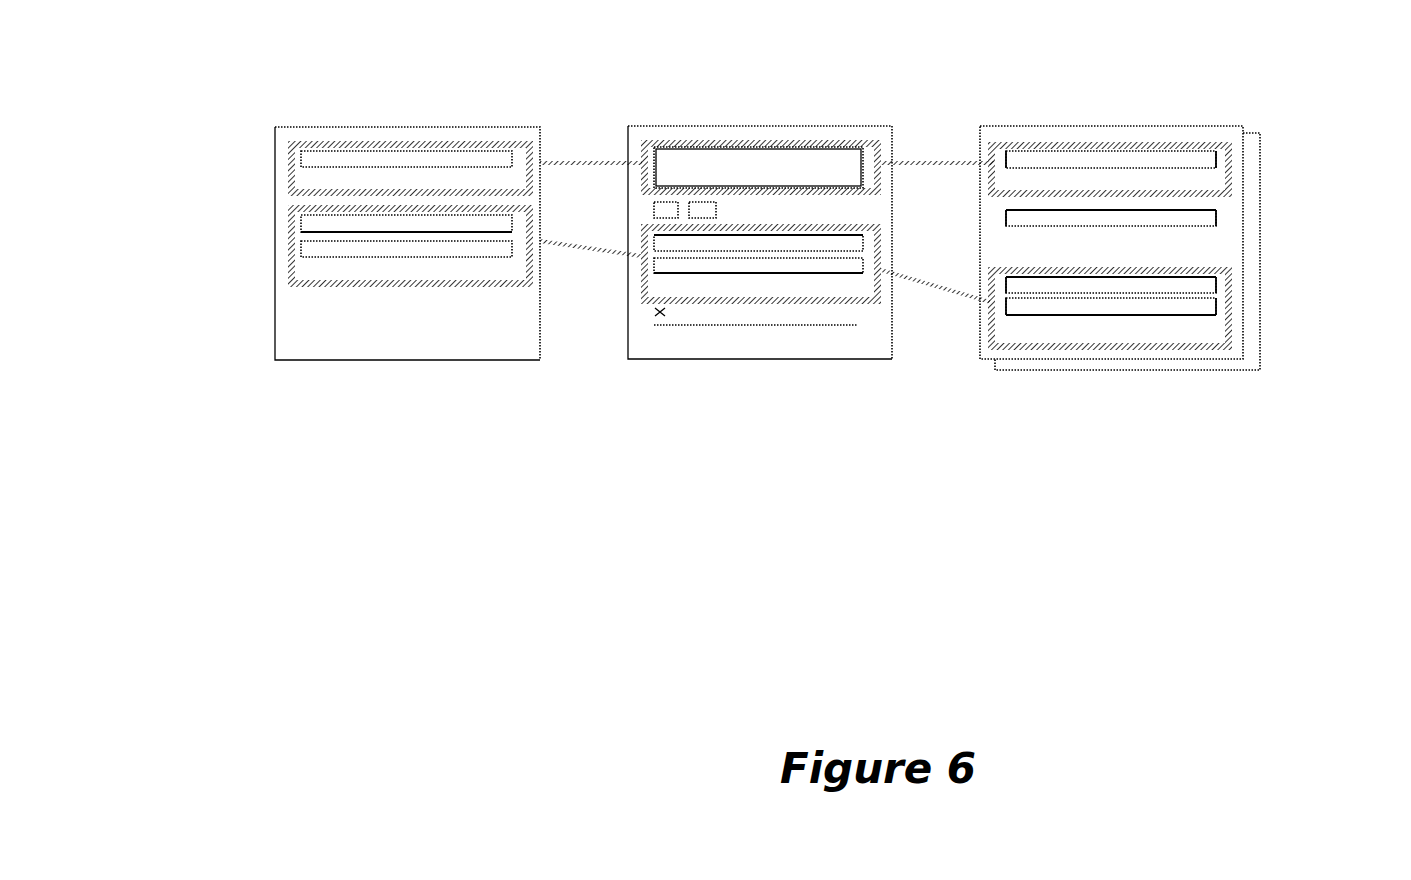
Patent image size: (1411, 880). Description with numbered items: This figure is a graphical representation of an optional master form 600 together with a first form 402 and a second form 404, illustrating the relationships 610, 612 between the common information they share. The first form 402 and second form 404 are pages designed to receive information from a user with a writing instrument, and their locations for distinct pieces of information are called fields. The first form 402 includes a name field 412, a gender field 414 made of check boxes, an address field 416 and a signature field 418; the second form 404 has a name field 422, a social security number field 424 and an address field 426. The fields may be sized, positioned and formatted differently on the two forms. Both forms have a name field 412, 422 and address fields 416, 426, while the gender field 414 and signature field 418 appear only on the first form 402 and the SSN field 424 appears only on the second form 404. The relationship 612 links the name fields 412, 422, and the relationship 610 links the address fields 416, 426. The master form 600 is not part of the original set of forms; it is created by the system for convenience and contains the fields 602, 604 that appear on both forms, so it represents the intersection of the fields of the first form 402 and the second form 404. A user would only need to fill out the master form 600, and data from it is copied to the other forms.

The master form 600 is at (393, 357).
The master form field 602 is at (303, 158).
The master form field 604 is at (303, 248).
The first form 402 is at (812, 358).
The name field 412 is at (655, 153).
The gender field 414 is at (655, 210).
The address field 416 is at (650, 265).
The signature field 418 is at (650, 316).
The second form 404 is at (1055, 368).
The name field 422 is at (1216, 158).
The social security number (SSN) field 424 is at (1216, 217).
The address field 426 is at (1216, 305).
The relationship 610 is at (940, 290).
The relationship 612 is at (931, 163).